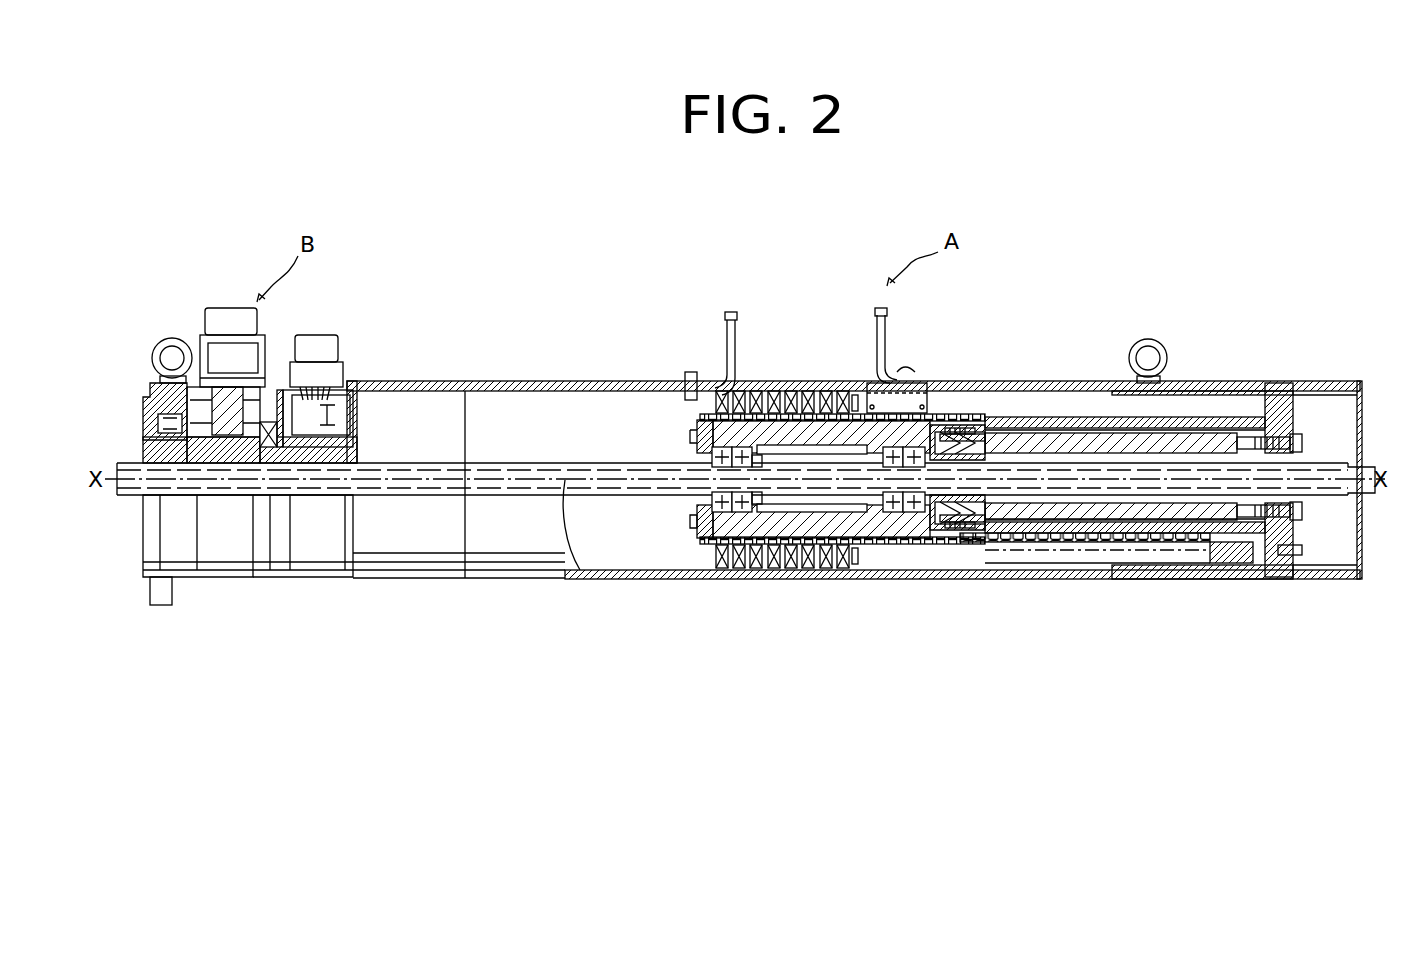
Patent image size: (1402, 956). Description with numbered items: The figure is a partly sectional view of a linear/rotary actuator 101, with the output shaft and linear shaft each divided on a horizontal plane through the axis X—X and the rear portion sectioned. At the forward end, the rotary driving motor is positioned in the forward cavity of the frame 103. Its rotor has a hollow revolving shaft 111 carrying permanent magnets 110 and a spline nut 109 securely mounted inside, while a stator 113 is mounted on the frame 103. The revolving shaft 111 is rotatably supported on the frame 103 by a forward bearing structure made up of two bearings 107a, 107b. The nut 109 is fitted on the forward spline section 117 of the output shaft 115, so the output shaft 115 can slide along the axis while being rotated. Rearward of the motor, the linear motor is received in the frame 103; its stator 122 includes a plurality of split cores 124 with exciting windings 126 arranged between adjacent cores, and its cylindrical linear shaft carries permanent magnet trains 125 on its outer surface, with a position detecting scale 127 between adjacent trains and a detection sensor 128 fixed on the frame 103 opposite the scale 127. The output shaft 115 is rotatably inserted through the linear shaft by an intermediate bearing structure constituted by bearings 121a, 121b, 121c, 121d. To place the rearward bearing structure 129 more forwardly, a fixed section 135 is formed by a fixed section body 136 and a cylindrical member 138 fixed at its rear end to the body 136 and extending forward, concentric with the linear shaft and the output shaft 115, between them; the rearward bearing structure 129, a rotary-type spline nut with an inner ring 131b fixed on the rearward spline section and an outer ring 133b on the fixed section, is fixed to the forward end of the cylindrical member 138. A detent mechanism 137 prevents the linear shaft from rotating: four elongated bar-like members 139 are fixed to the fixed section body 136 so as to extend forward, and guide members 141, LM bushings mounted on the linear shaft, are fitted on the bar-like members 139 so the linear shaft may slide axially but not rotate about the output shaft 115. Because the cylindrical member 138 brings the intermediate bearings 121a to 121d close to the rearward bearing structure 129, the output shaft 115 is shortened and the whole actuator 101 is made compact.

The linear/rotary actuator 101 is at (1029, 267).
The frame 103 is at (550, 381).
The bearing 107a is at (200, 437).
The bearing 107b is at (273, 447).
The spline nut 109 is at (265, 447).
The permanent magnets 110 is at (183, 435).
The revolving shaft 111 is at (223, 447).
The stator 113 is at (228, 403).
The output shaft 115 is at (593, 463).
The forward spline section 117 is at (185, 440).
The bearing 121a is at (720, 580).
The bearing 121b is at (743, 580).
The bearing 121c is at (892, 580).
The bearing 121d is at (930, 580).
The stator 122 is at (780, 381).
The split cores 124 is at (763, 380).
The permanent magnet trains 125 is at (712, 549).
The exciting windings 126 is at (777, 381).
The position detecting scale 127 is at (1208, 418).
The detection sensor 128 is at (960, 381).
The rearward bearing structure 129 is at (989, 440).
The inner ring 131b is at (1027, 580).
The outer ring 133b is at (995, 580).
The fixed section 135 is at (1280, 376).
The fixed section body 136 is at (1297, 418).
The detent mechanism 137 is at (1247, 578).
The cylindrical member 138 is at (1087, 425).
The bar-like members 139 is at (1137, 556).
The guide members 141 is at (1222, 560).